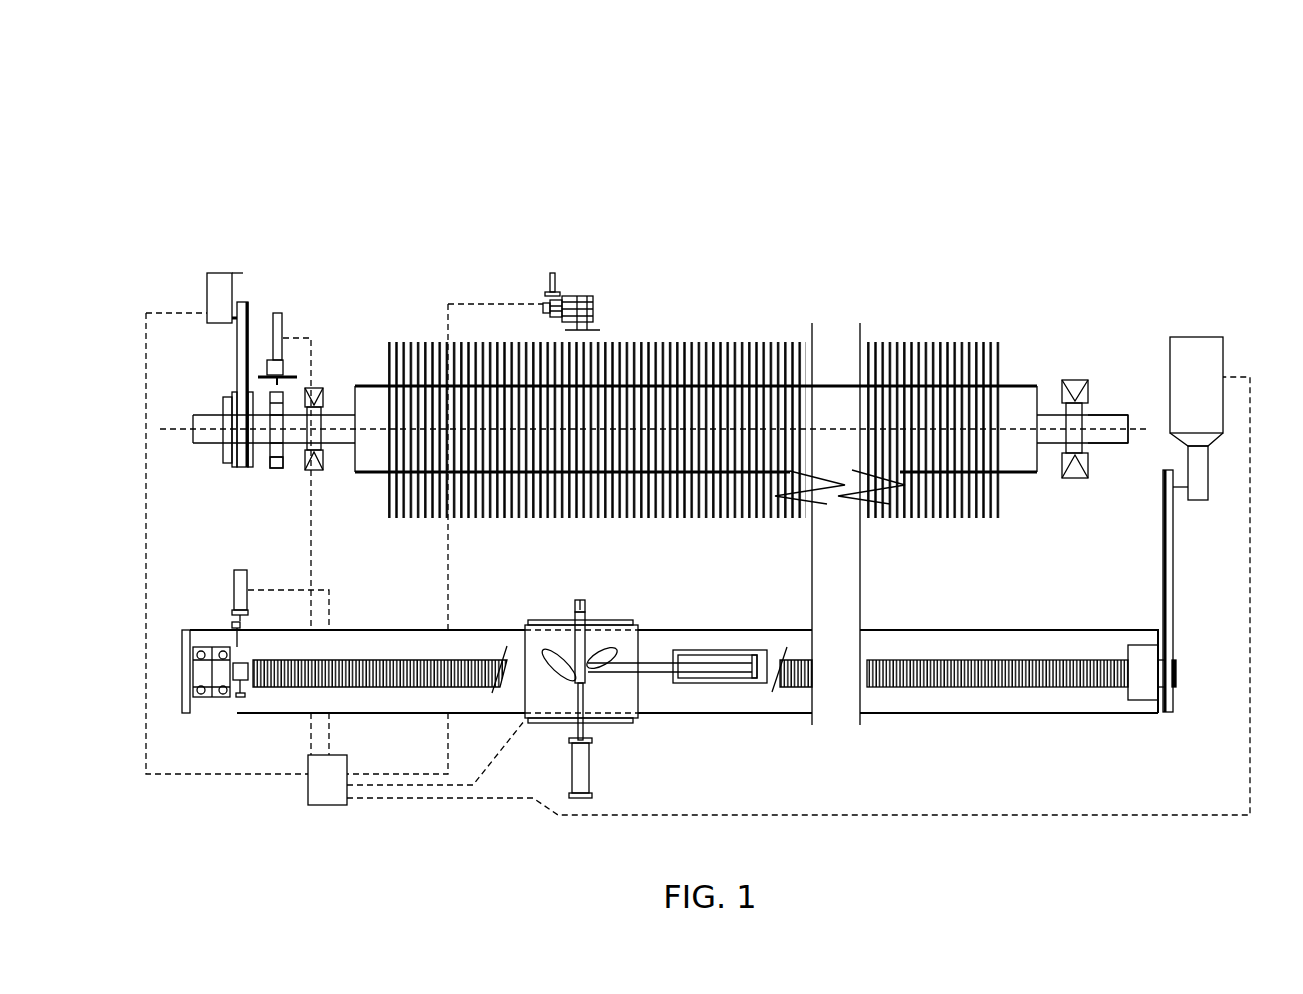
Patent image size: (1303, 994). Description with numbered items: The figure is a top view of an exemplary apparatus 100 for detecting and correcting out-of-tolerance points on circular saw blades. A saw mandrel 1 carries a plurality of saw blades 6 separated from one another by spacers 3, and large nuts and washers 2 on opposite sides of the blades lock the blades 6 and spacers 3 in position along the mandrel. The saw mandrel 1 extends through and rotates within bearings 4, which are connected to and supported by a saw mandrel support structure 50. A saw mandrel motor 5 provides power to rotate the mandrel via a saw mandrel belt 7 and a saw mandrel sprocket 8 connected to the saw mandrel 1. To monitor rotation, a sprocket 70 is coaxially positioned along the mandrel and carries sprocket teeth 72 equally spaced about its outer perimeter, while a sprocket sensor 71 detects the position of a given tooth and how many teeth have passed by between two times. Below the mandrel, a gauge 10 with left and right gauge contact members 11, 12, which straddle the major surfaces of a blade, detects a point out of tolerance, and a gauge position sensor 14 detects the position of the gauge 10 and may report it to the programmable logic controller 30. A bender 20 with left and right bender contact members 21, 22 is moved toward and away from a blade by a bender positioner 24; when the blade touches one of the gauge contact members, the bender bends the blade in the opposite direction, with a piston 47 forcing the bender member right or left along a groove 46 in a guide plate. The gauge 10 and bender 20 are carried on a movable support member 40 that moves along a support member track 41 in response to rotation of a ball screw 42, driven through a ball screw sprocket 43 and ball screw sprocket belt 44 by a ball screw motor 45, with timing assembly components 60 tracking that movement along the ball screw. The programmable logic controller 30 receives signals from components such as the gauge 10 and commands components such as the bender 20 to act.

The apparatus 100 is at (936, 137).
The saw mandrel 1 is at (1105, 415).
The large nuts and washers 2 is at (375, 460).
The spacers 3 is at (772, 387).
The bearings 4 is at (348, 413).
The saw mandrel motor 5 is at (207, 300).
The saw blades 6 is at (686, 342).
The saw mandrel belt 7 is at (238, 382).
The saw mandrel sprocket 8 is at (218, 432).
The gauge 10 is at (593, 298).
The left gauge contact member 11 is at (565, 330).
The right gauge contact member 12 is at (600, 330).
The gauge position sensor 14 is at (555, 282).
The bender 20 is at (598, 672).
The left bender contact member 21 is at (577, 603).
The right bender contact member 22 is at (587, 603).
The bender positioner 24 is at (583, 783).
The programmable logic controller 30 is at (308, 805).
The movable support member 40 is at (563, 705).
The support member track 41 is at (957, 715).
The ball screw 42 is at (253, 683).
The ball screw sprocket 43 is at (1170, 692).
The ball screw sprocket belt 44 is at (1170, 575).
The ball screw motor 45 is at (1195, 337).
The groove 46 is at (543, 655).
The piston 47 is at (713, 668).
The saw mandrel support structure 50 is at (318, 390).
The timing assembly components 60 is at (236, 577).
The sprocket 70 is at (280, 399).
The sprocket sensor 71 is at (278, 313).
The sprocket teeth 72 is at (275, 465).